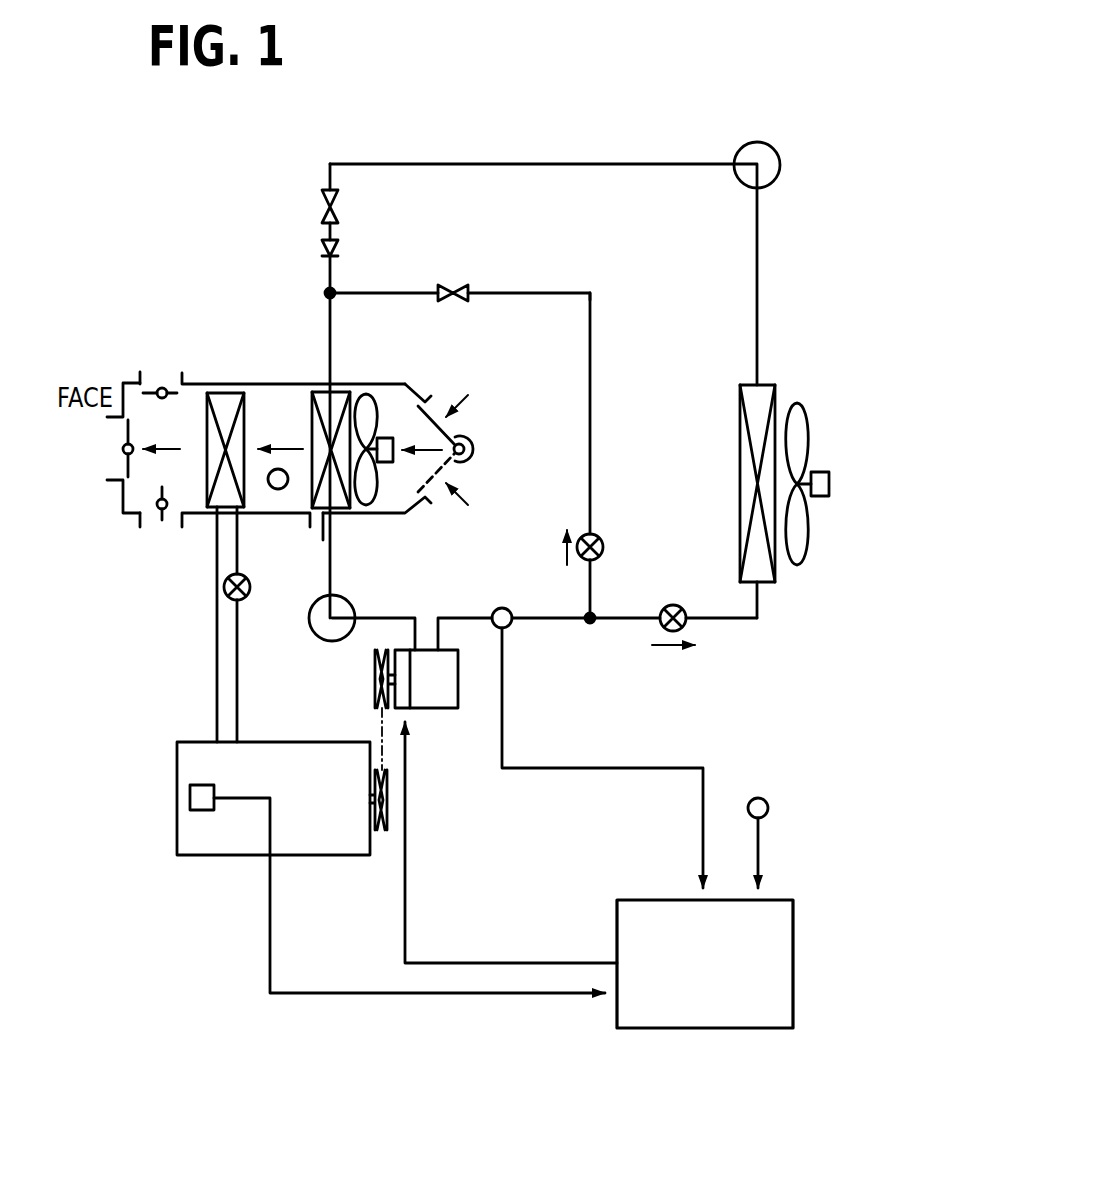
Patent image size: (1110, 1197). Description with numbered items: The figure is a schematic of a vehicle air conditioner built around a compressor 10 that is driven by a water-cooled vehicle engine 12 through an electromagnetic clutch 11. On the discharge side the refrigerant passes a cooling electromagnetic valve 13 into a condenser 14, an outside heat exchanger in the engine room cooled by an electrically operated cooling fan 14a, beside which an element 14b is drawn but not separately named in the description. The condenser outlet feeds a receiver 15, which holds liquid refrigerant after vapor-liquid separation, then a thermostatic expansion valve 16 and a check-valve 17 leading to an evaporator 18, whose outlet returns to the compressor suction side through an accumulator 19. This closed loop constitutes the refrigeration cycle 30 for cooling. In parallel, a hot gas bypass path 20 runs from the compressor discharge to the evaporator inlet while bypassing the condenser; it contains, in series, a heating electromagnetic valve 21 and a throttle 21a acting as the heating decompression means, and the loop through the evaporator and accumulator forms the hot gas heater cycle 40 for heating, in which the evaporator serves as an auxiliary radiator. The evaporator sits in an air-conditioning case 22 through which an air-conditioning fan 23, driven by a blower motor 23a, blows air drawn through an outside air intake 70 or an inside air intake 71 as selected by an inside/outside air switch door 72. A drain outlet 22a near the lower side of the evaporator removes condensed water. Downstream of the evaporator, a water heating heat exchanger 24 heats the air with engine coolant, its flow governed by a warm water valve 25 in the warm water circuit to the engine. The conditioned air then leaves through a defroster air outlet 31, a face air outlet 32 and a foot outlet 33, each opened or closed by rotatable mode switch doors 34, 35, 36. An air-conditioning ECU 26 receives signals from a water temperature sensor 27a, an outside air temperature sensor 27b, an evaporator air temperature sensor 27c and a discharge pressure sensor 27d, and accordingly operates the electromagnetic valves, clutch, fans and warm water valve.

The compressor 10 is at (442, 710).
The electromagnetic clutch 11 is at (373, 680).
The vehicle engine 12 is at (200, 838).
The cooling electromagnetic valve 13 is at (675, 604).
The condenser 14 is at (739, 437).
The cooling fan 14a is at (800, 403).
The outdoor fan motor 14b is at (830, 480).
The receiver 15 is at (765, 143).
The thermostatic expansion valve 16 is at (320, 199).
The check-valve 17 is at (320, 250).
The evaporator 18 is at (322, 393).
The accumulator 19 is at (352, 604).
The hot gas bypass path 20 is at (526, 292).
The heating electromagnetic valve 21 is at (602, 537).
The throttle 21a is at (452, 284).
The air-conditioning case 22 is at (225, 380).
The drain outlet 22a is at (323, 540).
The air-conditioning fan 23 is at (364, 392).
The blower motor 23a is at (386, 437).
The water heating heat exchanger 24 is at (232, 492).
The warm water valve 25 is at (248, 596).
The air-conditioning ECU 26 is at (616, 940).
The water temperature sensor 27a is at (189, 798).
The outside air temperature sensor 27b is at (758, 797).
The evaporator air temperature sensor 27c is at (278, 489).
The pressure sensor 27d is at (508, 628).
The refrigeration cycle 30 is at (762, 263).
The defroster air outlet 31 is at (140, 371).
The face air outlet 32 is at (121, 447).
The foot outlet 33 is at (148, 527).
The mode switch door 34 is at (136, 380).
The mode switch door 35 is at (122, 468).
The mode switch door 36 is at (152, 497).
The hot gas heater cycle 40 is at (598, 403).
The outside air intake 70 is at (450, 476).
The inside air intake 71 is at (457, 423).
The inside/outside air switch door 72 is at (466, 436).